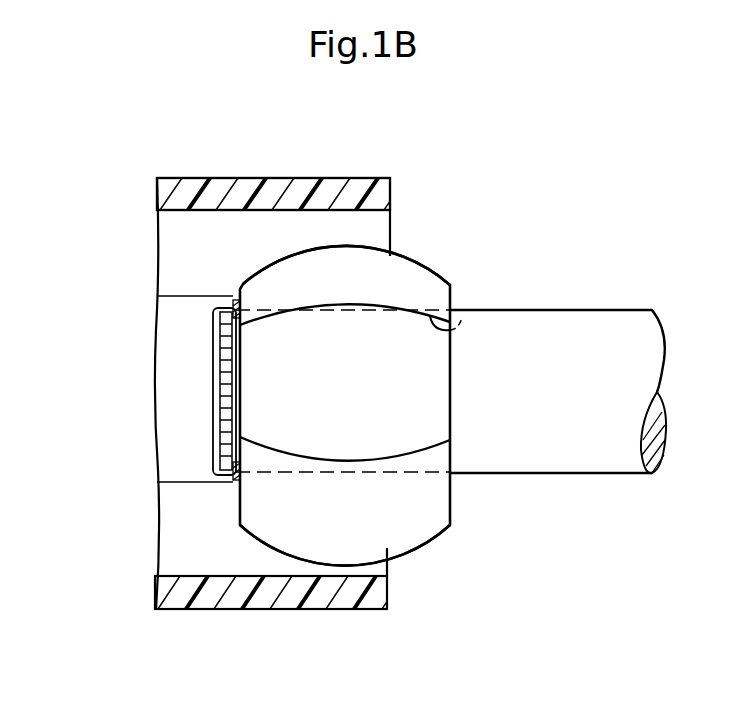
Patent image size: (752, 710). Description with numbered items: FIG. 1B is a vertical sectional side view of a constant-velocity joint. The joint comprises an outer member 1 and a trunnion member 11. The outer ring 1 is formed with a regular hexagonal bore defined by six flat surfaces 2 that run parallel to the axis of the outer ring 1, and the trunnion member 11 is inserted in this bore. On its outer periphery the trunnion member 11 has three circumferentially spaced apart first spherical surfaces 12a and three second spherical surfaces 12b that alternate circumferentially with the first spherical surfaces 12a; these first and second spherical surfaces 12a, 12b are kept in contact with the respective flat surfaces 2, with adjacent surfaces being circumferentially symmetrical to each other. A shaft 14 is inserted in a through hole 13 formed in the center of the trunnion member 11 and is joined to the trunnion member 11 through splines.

The outer member 1 is at (192, 178).
The flat surfaces 2 is at (258, 214).
The trunnion member 11 is at (428, 268).
The first spherical surfaces 12a is at (263, 373).
The second spherical surfaces 12b is at (338, 258).
The through hole 13 is at (455, 330).
The shaft 14 is at (582, 326).